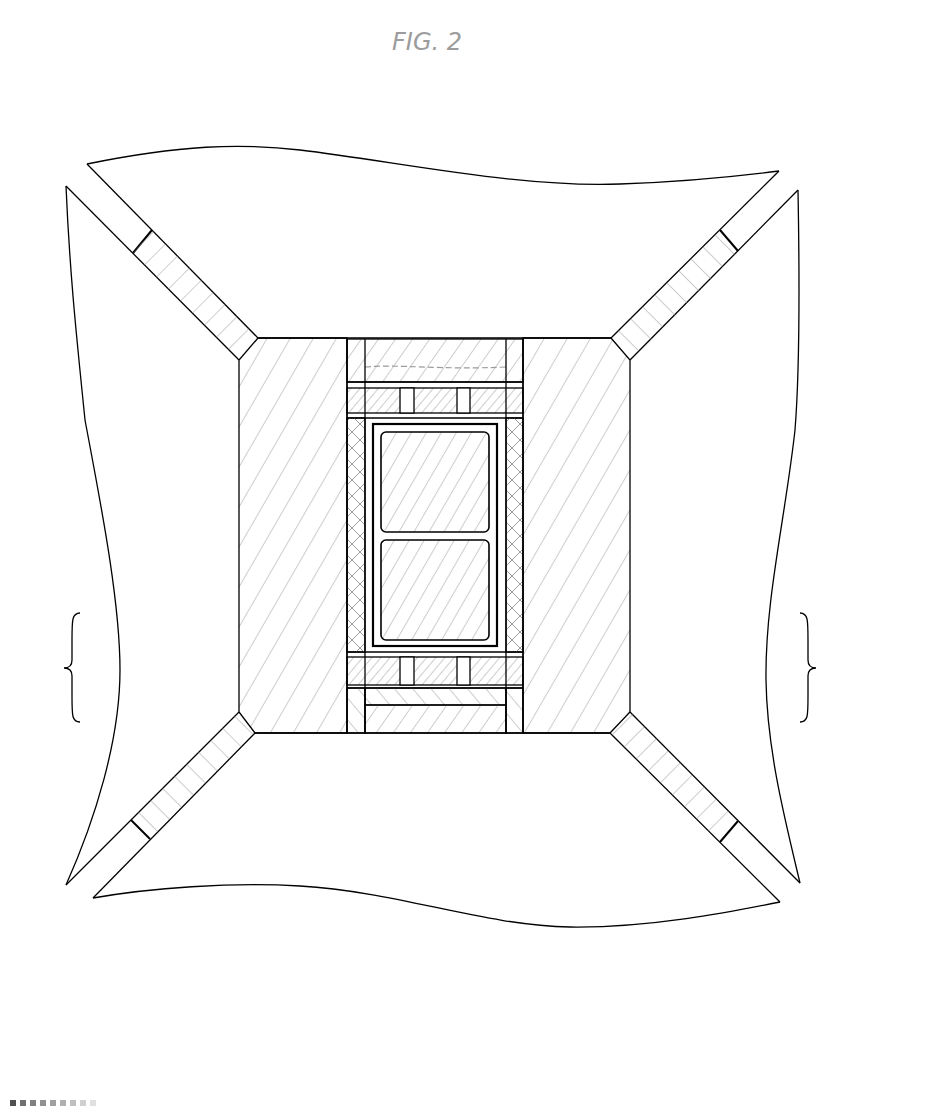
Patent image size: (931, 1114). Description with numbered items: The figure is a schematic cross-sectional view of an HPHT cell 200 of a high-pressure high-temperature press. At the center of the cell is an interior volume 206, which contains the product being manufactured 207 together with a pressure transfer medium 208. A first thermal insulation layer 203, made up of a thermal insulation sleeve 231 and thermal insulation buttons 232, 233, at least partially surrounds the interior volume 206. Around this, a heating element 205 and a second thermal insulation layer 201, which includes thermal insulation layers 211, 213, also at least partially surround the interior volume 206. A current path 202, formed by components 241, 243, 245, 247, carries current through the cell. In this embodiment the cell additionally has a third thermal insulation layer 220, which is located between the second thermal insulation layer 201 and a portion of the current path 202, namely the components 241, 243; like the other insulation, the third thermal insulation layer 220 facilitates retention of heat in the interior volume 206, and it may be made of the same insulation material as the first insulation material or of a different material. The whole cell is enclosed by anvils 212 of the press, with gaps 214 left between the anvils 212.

The HPHT cell 200 is at (612, 980).
The second thermal insulation layer 201 is at (431, 532).
The current path 202 is at (525, 385).
The first thermal insulation layer 203 is at (447, 666).
The heating element 205 is at (370, 482).
The interior volume 206 is at (493, 558).
The product being manufactured 207 is at (432, 592).
The pressure transfer medium 208 is at (352, 447).
The thermal insulation layer 211 is at (435, 360).
The anvils 212 is at (460, 267).
The thermal insulation layer 213 is at (431, 532).
The gaps 214 is at (168, 233).
The third thermal insulation layer 220 is at (377, 373).
The thermal insulation sleeve 231 is at (347, 610).
The thermal insulation button 232 is at (450, 670).
The thermal insulation button 233 is at (347, 675).
The component of current path 241 is at (395, 670).
The component of current path 243 is at (407, 680).
The component of current path 245 is at (360, 700).
The component of current path 247 is at (513, 720).